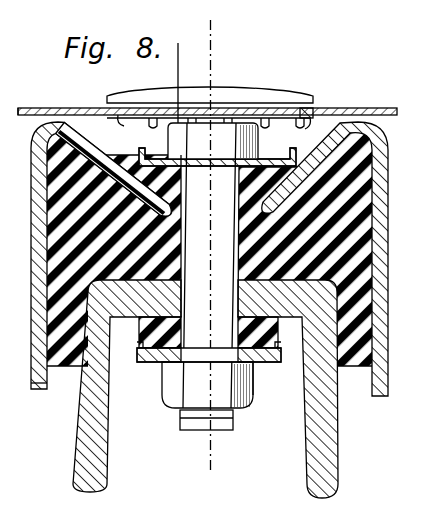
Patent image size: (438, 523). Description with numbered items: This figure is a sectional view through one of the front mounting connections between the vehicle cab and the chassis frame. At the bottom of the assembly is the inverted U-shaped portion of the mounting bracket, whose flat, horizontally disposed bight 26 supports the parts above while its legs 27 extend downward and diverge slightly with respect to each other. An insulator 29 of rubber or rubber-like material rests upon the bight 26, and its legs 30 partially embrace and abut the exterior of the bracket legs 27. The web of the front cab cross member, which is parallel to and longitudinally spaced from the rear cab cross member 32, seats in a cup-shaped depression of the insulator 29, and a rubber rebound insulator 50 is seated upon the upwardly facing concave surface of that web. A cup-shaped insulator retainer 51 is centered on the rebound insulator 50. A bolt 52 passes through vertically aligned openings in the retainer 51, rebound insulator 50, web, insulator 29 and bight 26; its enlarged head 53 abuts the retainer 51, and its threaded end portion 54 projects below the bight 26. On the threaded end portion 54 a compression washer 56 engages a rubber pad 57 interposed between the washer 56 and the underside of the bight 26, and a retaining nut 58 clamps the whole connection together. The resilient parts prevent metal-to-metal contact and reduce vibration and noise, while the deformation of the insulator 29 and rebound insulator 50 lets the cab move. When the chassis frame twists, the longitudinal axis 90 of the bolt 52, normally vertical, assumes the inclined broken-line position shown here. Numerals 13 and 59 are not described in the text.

The cup bottom flange 13 is at (38, 352).
The bight 26 is at (181, 389).
The legs 27 is at (88, 442).
The insulator 29 is at (69, 370).
The legs 30 is at (38, 294).
The rear cab cross member 32 is at (200, 70).
The rebound insulator 50 is at (226, 178).
The insulator retainer 51 is at (300, 116).
The bolt 52 is at (229, 243).
The enlarged head 53 is at (248, 123).
The threaded end portion 54 is at (217, 432).
The compression washer 56 is at (258, 366).
The pad 57 is at (279, 350).
The retaining nut 58 is at (173, 404).
The plate edge 59 is at (27, 106).
The longitudinal axis 90 is at (212, 42).